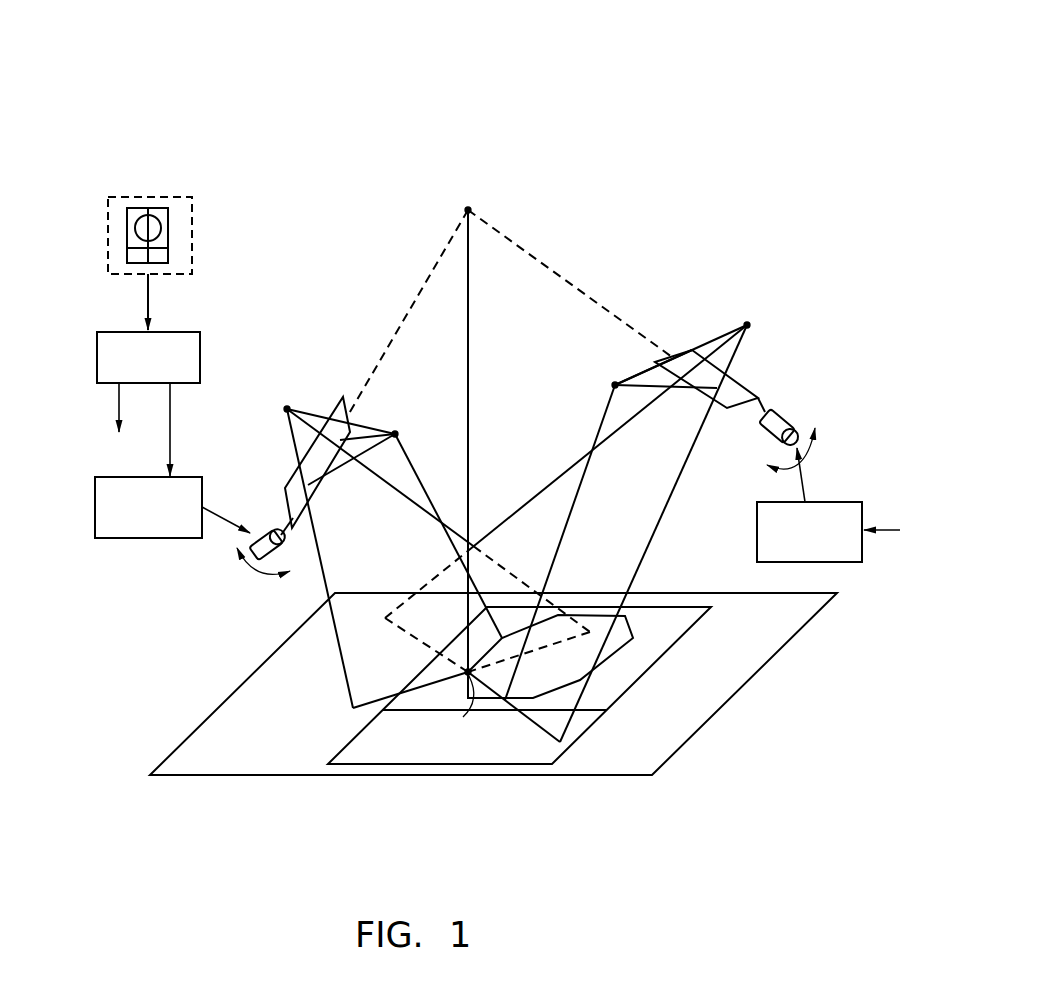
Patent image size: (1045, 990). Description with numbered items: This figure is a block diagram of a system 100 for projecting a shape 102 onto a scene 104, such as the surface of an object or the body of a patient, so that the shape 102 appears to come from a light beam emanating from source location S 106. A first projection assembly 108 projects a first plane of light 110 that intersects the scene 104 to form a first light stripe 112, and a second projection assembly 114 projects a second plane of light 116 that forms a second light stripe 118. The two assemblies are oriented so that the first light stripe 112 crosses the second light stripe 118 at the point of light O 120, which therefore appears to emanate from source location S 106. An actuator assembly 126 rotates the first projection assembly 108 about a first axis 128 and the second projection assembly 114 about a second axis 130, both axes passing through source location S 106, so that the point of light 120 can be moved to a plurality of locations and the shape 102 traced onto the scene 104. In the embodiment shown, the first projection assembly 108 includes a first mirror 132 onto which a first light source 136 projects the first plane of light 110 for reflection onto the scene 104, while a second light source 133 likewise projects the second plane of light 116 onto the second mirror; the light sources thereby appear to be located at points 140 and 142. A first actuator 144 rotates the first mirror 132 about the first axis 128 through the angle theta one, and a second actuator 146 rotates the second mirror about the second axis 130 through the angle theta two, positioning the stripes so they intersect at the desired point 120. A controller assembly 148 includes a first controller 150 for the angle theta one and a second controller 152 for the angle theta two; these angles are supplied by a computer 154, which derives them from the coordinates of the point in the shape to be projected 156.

The system 100 is at (582, 130).
The shape 102 is at (662, 662).
The scene 104 is at (687, 720).
The source location S 106 is at (473, 210).
The first projection assembly 108 is at (786, 331).
The first plane of light 110 is at (676, 492).
The first light stripe l1 112 is at (537, 733).
The second projection assembly 114 is at (262, 364).
The second plane of light 116 is at (345, 632).
The second light stripe l2 118 is at (358, 712).
The point of light O 120 is at (463, 717).
The actuator assembly 126 is at (328, 337).
The first axis 128 is at (574, 283).
The second axis 130 is at (418, 285).
The first mirror M1 132 is at (806, 416).
The virtual source L2 133 is at (394, 431).
The first light source L1 136 is at (614, 382).
The point L1' 140 is at (782, 323).
The point L2' 142 is at (293, 406).
The first actuator 144 is at (807, 422).
The second actuator 146 is at (238, 538).
The controller assembly 148 is at (80, 497).
The first controller 150 is at (863, 551).
The second controller 152 is at (148, 542).
The computer 154 is at (97, 352).
The shape to be projected 156 is at (107, 238).